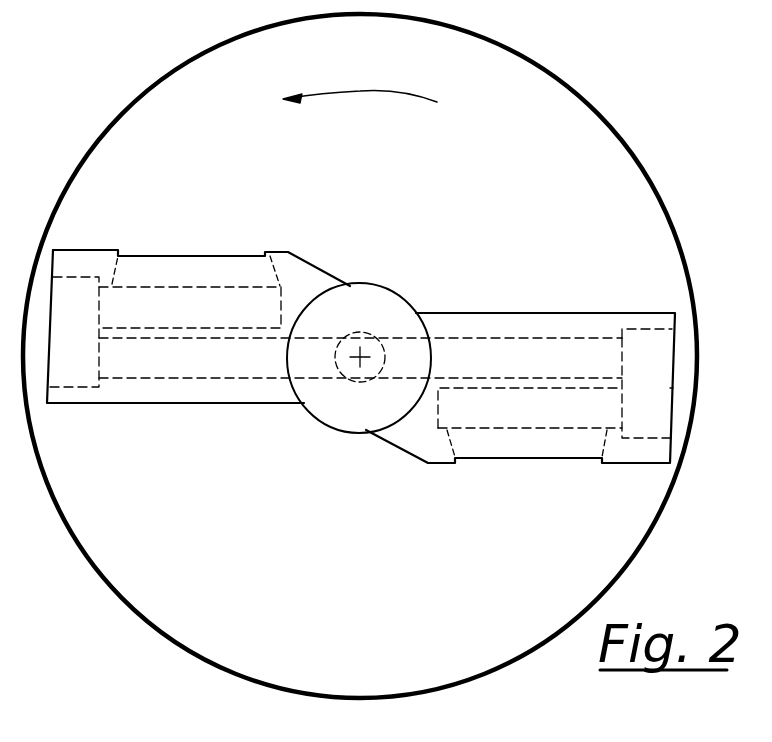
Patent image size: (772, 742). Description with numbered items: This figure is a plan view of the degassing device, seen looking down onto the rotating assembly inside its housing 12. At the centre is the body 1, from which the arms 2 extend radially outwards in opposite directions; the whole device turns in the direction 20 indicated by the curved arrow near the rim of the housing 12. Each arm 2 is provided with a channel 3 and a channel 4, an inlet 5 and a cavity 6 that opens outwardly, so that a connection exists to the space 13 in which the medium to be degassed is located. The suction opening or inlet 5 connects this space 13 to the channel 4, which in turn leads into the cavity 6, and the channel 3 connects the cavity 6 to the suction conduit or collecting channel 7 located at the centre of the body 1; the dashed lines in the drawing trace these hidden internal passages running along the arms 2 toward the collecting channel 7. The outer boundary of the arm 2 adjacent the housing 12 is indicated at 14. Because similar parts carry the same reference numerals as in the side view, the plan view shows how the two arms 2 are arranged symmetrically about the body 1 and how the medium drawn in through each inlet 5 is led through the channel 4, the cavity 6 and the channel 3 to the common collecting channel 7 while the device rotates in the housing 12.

The body 1 is at (322, 398).
The arms 2 is at (273, 252).
The channel 3 is at (463, 355).
The channel 4 is at (500, 403).
The inlet 5 is at (165, 253).
The cavity 6 is at (653, 358).
The collecting channel 7 is at (360, 333).
The housing 12 is at (88, 558).
The space 13 is at (192, 582).
The outer edge 14 is at (670, 388).
The direction of rotation 20 is at (358, 92).